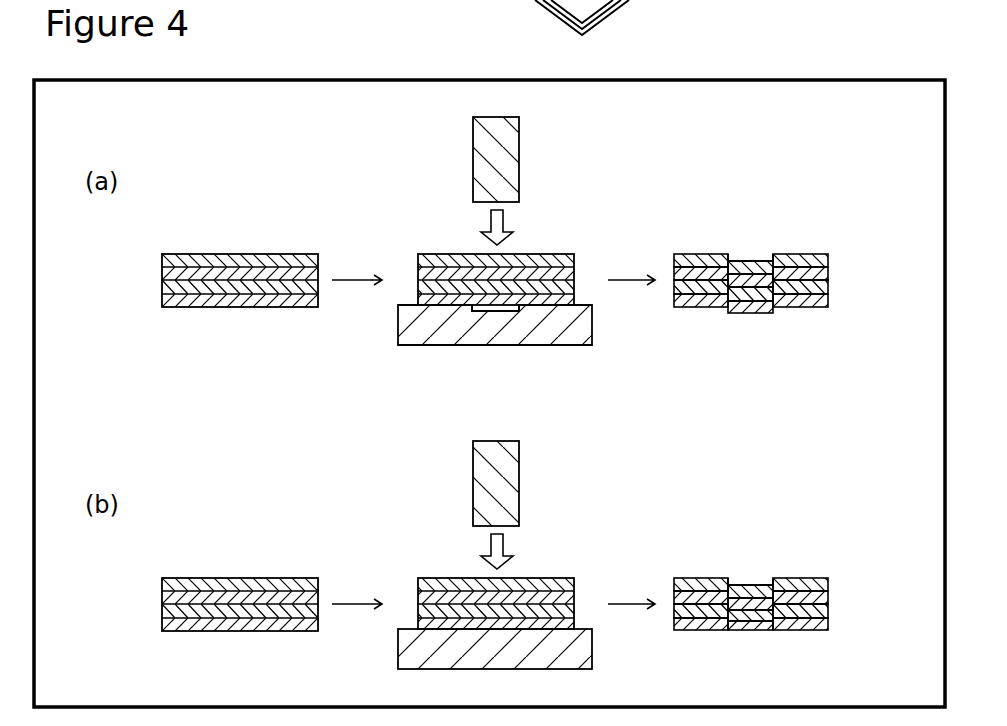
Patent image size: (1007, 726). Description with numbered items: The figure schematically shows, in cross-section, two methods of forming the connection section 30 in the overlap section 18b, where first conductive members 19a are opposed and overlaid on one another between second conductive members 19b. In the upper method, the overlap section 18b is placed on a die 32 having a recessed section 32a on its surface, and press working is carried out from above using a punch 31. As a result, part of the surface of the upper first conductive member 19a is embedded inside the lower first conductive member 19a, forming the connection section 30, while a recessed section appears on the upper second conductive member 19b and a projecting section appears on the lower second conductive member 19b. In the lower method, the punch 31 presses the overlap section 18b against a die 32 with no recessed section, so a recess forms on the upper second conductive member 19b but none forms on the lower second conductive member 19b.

The overlap section 18b is at (248, 247).
The punch 31 is at (519, 128).
The die 32 is at (592, 330).
The recessed section 32a is at (492, 322).
The connection section 30 is at (757, 248).
The second conductive member 19b is at (828, 258).
The first conductive member 19a is at (828, 270).